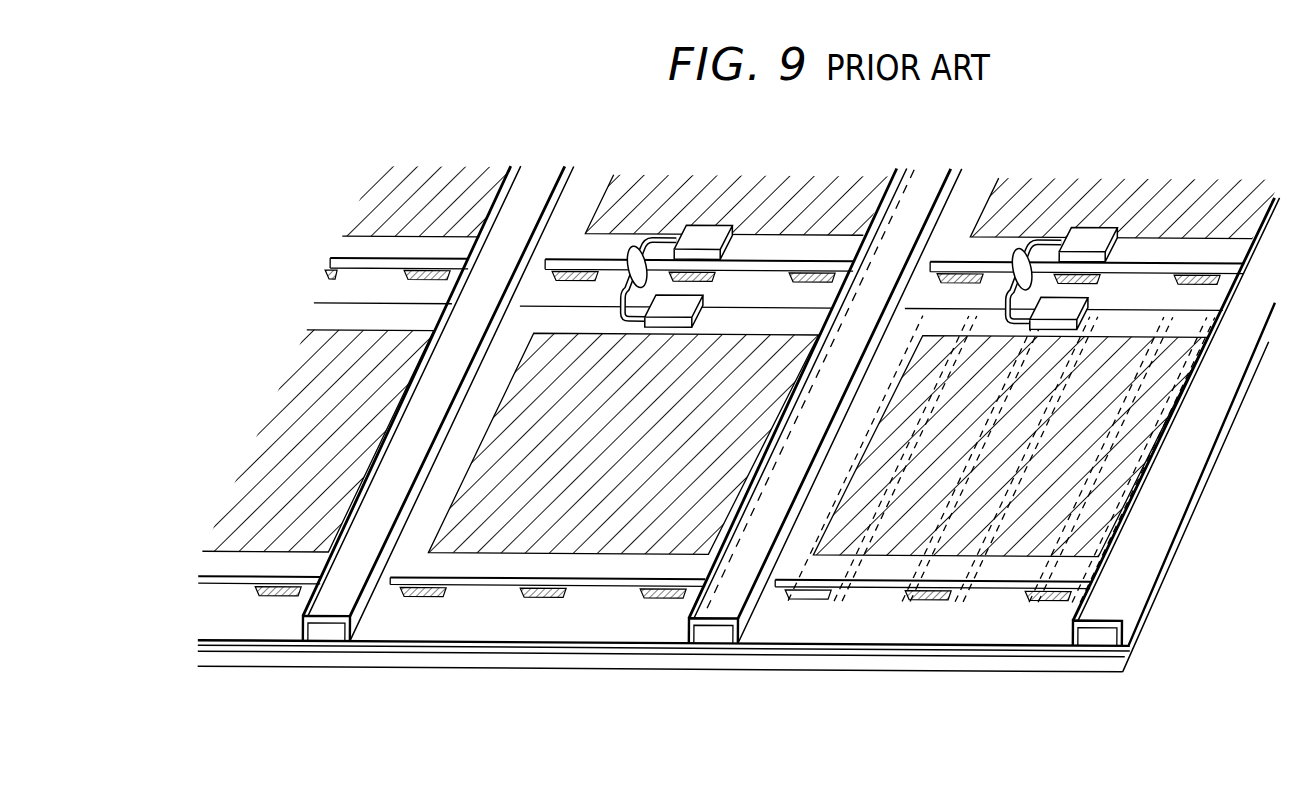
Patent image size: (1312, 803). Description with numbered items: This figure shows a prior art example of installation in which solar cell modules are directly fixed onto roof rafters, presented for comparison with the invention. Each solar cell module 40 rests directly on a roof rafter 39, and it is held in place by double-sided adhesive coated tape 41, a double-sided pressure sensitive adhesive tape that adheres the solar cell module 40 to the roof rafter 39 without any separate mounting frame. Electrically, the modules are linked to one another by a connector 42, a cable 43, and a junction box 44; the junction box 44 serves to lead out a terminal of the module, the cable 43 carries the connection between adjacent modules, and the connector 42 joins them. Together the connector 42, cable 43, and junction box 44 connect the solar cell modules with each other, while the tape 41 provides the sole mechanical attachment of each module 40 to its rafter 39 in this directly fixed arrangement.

The roof rafter 39 is at (473, 628).
The solar cell module 40 is at (635, 551).
The double-sided adhesive coated tape 41 is at (923, 597).
The connector 42 is at (1020, 263).
The cable 43 is at (1023, 258).
The junction box 44 is at (1097, 237).